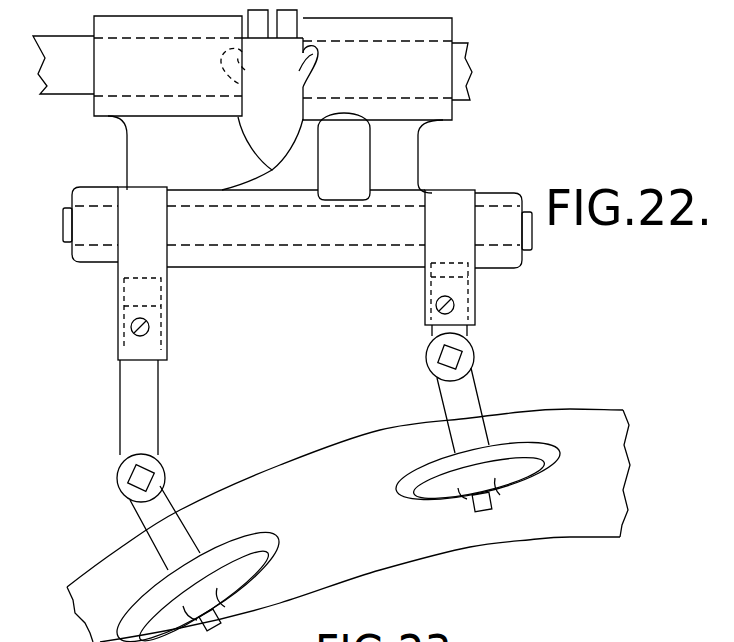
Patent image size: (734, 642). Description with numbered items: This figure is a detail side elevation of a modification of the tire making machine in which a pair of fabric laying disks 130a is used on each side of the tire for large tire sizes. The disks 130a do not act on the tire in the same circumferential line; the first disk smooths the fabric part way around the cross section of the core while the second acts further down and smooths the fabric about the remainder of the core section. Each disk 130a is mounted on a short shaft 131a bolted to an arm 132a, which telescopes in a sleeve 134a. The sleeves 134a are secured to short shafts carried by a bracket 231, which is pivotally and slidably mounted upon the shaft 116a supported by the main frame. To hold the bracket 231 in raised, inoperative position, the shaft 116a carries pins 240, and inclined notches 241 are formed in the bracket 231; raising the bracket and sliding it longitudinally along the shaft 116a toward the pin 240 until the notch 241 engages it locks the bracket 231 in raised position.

The shaft 116a is at (466, 60).
The bracket 231 is at (405, 160).
The pins 240 is at (293, 47).
The inclined notches 241 is at (300, 70).
The sleeves 134a is at (165, 289).
The arms 132a is at (128, 388).
The short shafts 131a is at (448, 397).
The disks 130a is at (163, 587).